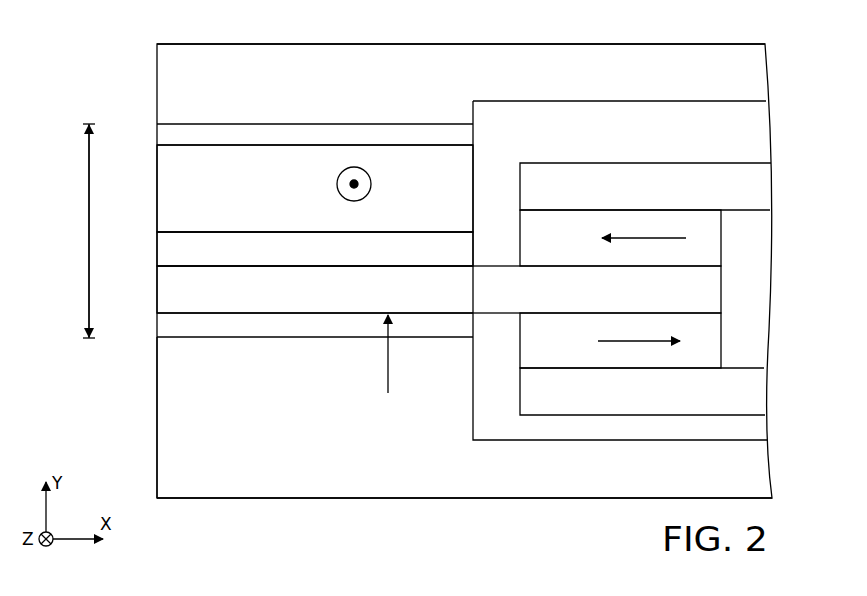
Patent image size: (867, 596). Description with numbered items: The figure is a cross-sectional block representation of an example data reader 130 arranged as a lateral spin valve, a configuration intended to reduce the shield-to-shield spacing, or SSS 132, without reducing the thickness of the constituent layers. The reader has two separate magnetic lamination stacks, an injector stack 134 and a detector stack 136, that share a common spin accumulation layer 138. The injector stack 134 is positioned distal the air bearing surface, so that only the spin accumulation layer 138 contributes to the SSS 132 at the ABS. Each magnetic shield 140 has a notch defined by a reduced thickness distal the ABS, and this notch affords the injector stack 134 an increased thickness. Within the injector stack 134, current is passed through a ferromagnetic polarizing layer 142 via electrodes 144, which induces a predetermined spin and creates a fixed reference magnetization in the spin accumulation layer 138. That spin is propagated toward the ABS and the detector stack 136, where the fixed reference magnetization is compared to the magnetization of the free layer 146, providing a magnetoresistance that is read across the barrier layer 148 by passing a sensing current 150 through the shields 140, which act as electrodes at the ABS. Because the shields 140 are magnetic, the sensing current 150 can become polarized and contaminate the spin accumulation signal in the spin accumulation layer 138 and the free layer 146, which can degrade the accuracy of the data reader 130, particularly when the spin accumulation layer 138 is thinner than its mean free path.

The data reader 130 is at (122, 28).
The SSS 132 is at (89, 168).
The injector stack 134 is at (524, 156).
The detector stack 136 is at (170, 344).
The spin accumulation layer 138 is at (715, 298).
The magnetic shield 140 is at (760, 82).
The ferromagnetic polarizing layer 142 is at (555, 246).
The electrodes 144 is at (555, 195).
The free layer 146 is at (465, 195).
The barrier layer 148 is at (465, 256).
The sensing current 150 is at (388, 366).